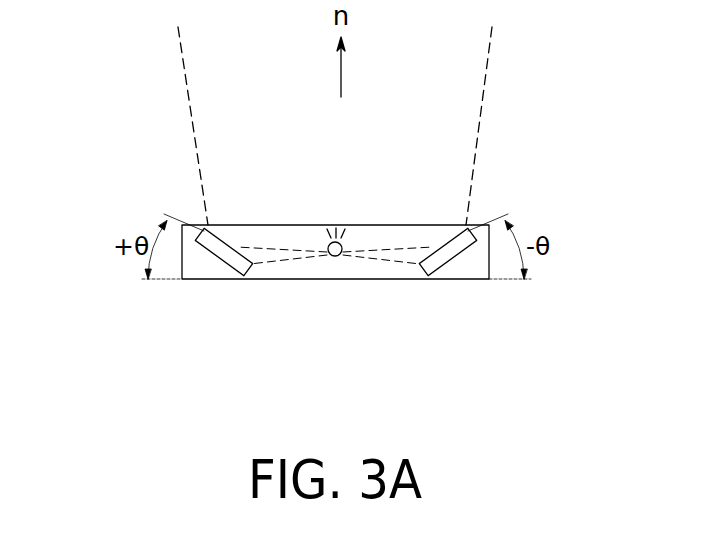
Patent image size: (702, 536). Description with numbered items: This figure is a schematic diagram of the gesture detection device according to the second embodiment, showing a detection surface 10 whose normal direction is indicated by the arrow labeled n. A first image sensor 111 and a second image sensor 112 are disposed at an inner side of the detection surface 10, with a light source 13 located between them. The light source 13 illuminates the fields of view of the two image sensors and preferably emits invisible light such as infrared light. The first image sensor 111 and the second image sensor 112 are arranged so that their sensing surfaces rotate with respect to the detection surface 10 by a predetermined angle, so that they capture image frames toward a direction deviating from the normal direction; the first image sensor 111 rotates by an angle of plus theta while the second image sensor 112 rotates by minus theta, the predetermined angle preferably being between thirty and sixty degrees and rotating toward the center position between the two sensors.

The detection surface 10 is at (185, 226).
The first image sensor 111 is at (205, 250).
The second image sensor 112 is at (460, 250).
The light source 13 is at (335, 252).